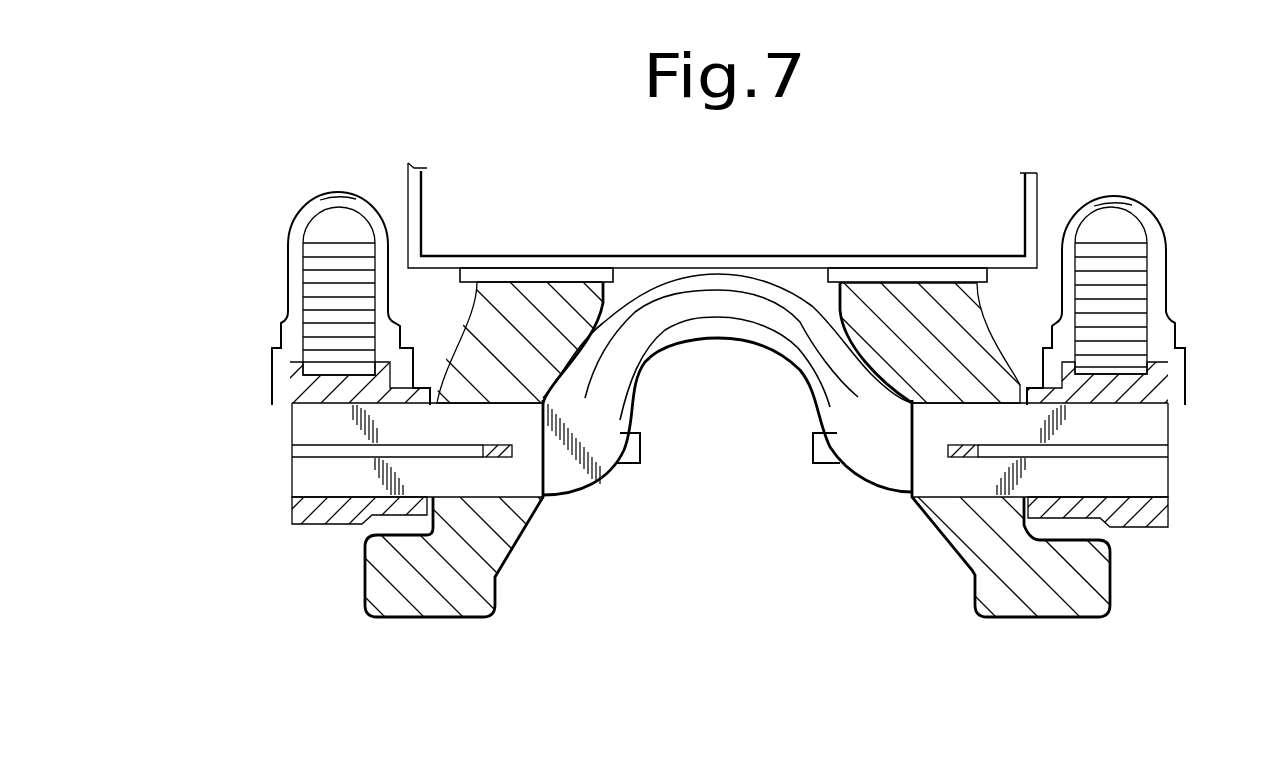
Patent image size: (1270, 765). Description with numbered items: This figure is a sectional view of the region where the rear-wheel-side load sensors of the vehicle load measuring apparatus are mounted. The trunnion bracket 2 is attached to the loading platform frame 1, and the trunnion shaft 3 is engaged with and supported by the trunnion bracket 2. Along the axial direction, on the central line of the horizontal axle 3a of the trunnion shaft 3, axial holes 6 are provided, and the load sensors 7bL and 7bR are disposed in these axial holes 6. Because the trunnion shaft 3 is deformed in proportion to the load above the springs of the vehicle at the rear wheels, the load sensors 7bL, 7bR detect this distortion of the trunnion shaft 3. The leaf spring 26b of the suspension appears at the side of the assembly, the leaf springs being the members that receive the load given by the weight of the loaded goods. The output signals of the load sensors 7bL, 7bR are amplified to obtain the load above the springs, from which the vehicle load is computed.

The loading platform frame 1 is at (423, 224).
The trunnion bracket 2 is at (527, 328).
The trunnion shaft 3 is at (713, 338).
The horizontal axle 3a is at (320, 487).
The axial hole 6 is at (350, 442).
The load sensor 7bL is at (491, 443).
The load sensor 7bR is at (967, 443).
The leaf spring 26b is at (318, 290).